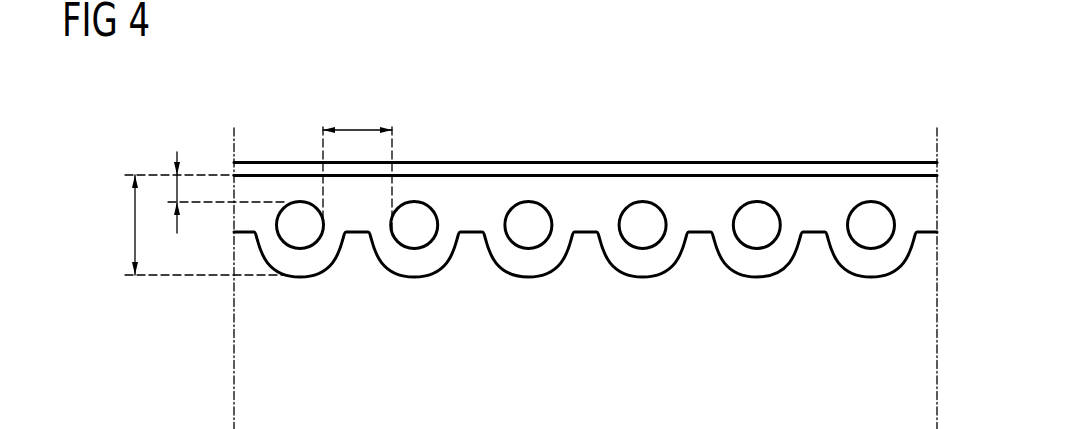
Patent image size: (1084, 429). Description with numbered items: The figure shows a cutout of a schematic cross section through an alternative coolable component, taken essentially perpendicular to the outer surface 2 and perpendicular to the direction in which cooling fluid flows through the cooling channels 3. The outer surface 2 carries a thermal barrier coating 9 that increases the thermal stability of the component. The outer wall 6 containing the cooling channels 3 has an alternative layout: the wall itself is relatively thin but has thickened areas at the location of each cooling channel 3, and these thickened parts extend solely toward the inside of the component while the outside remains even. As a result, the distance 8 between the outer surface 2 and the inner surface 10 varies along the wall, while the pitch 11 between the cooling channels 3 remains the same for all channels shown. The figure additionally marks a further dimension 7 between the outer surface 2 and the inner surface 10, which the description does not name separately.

The outer surface 2 is at (591, 176).
The cooling channel 3 is at (650, 250).
The outer wall 6 is at (585, 137).
The offset distance 7 is at (176, 190).
The distance 8 is at (134, 230).
The thermal barrier coating 9 is at (656, 169).
The inner surface 10 is at (548, 274).
The pitch 11 is at (356, 130).